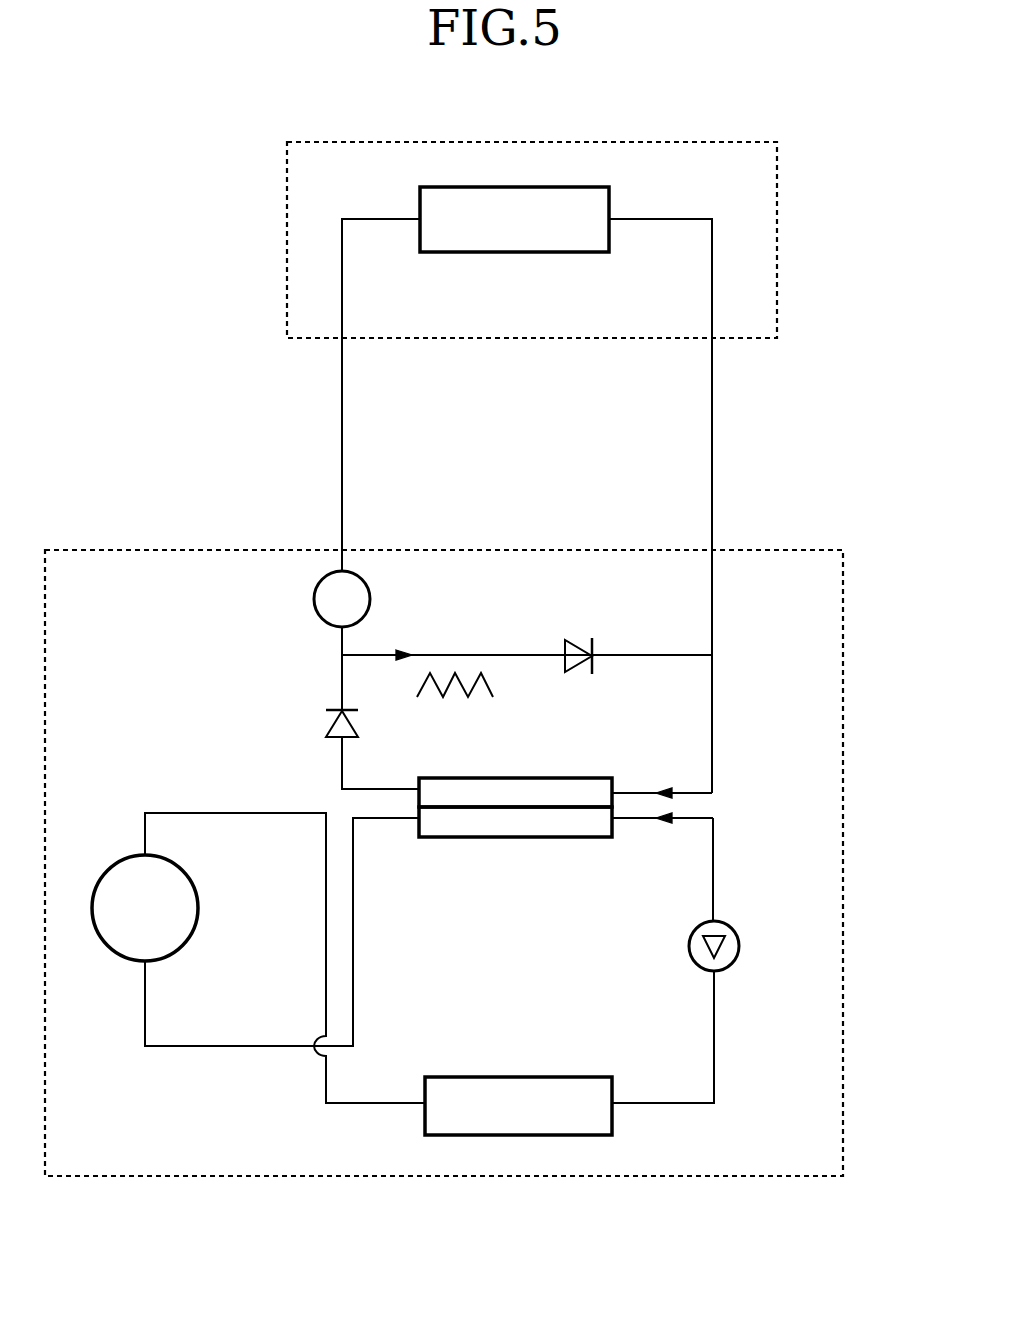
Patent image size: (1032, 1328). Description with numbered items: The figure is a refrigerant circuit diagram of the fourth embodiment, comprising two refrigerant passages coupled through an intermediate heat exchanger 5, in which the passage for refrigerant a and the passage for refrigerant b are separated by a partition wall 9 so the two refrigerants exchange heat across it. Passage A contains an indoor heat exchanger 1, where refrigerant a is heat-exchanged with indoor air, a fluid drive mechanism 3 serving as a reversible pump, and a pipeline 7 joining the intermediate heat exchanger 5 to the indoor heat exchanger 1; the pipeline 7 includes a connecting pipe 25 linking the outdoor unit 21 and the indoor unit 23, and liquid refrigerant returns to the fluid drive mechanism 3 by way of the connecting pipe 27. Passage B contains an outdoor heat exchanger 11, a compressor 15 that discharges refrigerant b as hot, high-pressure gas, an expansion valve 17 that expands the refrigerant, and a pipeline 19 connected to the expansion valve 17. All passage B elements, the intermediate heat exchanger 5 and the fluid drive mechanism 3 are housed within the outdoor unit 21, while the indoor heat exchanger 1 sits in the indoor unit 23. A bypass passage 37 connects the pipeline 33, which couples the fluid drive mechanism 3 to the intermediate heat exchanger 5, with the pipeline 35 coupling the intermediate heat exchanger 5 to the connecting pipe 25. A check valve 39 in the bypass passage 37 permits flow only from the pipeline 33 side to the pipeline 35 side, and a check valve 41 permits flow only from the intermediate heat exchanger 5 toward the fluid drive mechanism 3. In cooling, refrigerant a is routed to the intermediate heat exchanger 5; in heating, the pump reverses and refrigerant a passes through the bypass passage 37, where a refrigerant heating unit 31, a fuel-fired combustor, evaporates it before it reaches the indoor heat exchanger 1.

The indoor heat exchanger 1 is at (508, 253).
The fluid drive mechanism 3 is at (316, 598).
The intermediate heat exchanger 5 is at (510, 838).
The pipeline 7 is at (717, 403).
The partition wall 9 is at (512, 805).
The outdoor heat exchanger 11 is at (535, 1077).
The compressor 15 is at (184, 865).
The expansion valve 17 is at (747, 946).
The pipeline 19 is at (718, 912).
The outdoor unit 21 is at (843, 730).
The indoor unit 23 is at (777, 210).
The connecting pipe 25 is at (714, 515).
The connecting pipe 27 is at (343, 490).
The refrigerant heating unit 31 is at (457, 697).
The pipeline 33 is at (338, 766).
The pipeline 35 is at (713, 718).
The bypass passage 37 is at (508, 656).
The check valve 39 is at (575, 673).
The check valve 41 is at (328, 726).